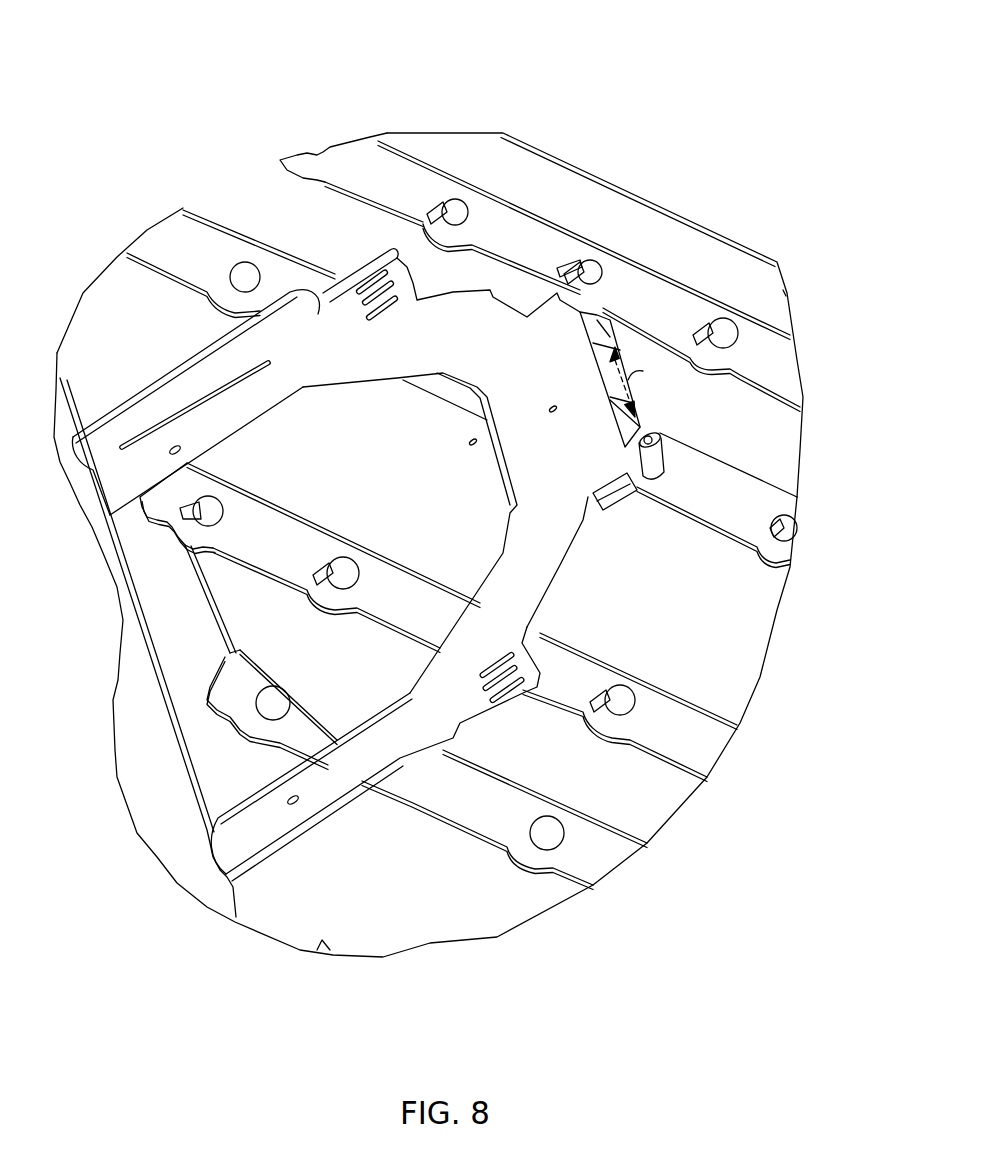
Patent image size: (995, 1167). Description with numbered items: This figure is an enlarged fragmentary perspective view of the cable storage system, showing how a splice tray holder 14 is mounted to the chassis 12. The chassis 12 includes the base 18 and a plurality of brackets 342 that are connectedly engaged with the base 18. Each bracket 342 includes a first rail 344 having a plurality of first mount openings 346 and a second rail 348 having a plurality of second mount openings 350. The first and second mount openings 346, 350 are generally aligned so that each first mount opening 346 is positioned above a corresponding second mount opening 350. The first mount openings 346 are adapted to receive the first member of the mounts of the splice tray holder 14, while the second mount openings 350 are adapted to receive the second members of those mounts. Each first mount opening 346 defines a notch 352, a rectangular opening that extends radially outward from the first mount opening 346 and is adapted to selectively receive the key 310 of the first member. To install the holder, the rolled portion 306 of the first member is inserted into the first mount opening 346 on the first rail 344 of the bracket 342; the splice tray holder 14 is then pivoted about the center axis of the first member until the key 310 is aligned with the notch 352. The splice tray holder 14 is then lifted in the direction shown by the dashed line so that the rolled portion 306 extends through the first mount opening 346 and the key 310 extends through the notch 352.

The chassis 12 is at (557, 253).
The splice tray holder 14 is at (481, 474).
The base 18 is at (698, 555).
The rolled portion 306 is at (601, 277).
The key 310 is at (577, 267).
The bracket 342 is at (553, 203).
The first rail 344 is at (497, 222).
The first mount opening 346 is at (738, 244).
The second rail 348 is at (717, 503).
The second mount opening 350 is at (668, 462).
The notch 352 is at (697, 330).